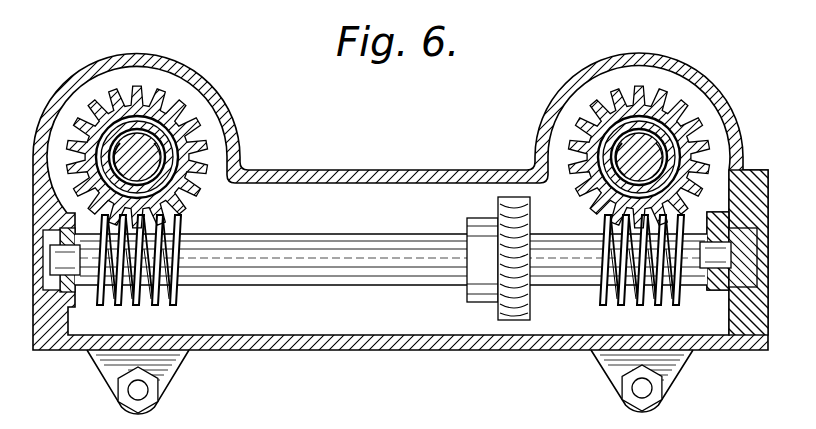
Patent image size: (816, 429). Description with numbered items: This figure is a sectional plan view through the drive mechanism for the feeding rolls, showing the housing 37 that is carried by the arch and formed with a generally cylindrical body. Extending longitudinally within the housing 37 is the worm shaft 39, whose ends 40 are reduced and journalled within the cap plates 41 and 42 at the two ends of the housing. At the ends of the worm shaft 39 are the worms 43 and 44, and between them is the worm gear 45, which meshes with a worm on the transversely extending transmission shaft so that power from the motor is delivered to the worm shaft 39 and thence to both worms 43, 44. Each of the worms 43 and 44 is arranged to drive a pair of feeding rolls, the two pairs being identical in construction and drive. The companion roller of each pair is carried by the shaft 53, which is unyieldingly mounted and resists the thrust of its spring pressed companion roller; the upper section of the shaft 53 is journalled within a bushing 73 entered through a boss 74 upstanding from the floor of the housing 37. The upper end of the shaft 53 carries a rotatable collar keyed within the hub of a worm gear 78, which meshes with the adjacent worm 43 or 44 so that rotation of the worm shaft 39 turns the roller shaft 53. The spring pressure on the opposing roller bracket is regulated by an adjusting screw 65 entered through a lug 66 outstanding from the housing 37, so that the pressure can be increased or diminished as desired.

The housing 37 is at (387, 170).
The worm shaft 39 is at (365, 236).
The reduced ends 40 is at (62, 258).
The cap plate 41 is at (752, 215).
The cap plate 42 is at (45, 228).
The worm 43 is at (657, 300).
The worm 44 is at (165, 297).
The worm gear 45 is at (500, 310).
The shaft 53 is at (173, 133).
The adjusting screw 65 is at (140, 390).
The lug 66 is at (167, 370).
The bushing 73 is at (165, 158).
The boss 74 is at (168, 143).
The worm gear 78 is at (200, 188).